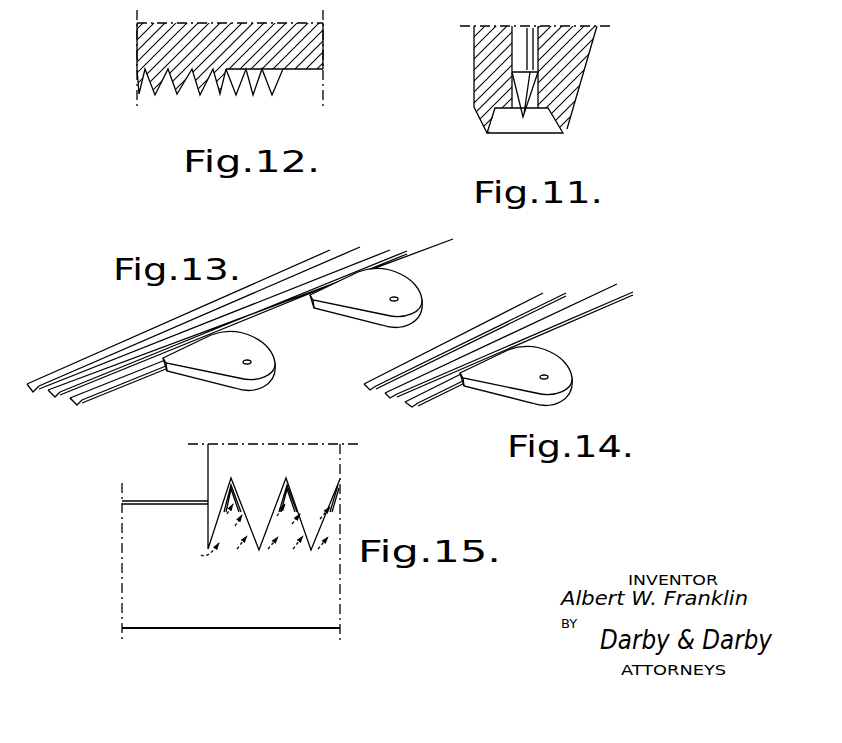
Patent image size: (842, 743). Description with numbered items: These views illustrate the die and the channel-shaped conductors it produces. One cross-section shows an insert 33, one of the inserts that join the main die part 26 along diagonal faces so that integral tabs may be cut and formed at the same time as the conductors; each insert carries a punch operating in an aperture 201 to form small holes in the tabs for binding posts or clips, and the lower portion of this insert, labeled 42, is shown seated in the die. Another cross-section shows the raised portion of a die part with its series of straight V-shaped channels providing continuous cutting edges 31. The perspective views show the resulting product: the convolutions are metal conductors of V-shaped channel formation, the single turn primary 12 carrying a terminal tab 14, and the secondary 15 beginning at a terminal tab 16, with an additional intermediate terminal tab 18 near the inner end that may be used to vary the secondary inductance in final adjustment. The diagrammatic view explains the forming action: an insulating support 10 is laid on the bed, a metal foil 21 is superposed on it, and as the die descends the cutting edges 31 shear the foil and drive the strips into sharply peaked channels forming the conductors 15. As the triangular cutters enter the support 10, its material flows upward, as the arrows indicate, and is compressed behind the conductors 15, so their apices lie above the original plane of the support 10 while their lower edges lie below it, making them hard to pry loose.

In FIG. 15, the insulating support 10 is at (129, 564).
In FIG. 13, the single turn primary 12 is at (109, 377).
In FIG. 13, the terminal tab 14 is at (274, 350).
In FIG. 13, the secondary conductors 15 is at (124, 350).
In FIG. 14, the secondary conductors 15 is at (460, 330).
In FIG. 15, the secondary conductors 15 is at (215, 484).
In FIG. 13, the terminal tab 16 is at (397, 286).
In FIG. 14, the additional terminal tab 18 is at (547, 365).
In FIG. 15, the metal foil 21 is at (153, 492).
In FIG. 12, the main die part 26 is at (294, 30).
In FIG. 15, the main die part 26 is at (209, 456).
In FIG. 12, the cutting edges 31 is at (188, 92).
In FIG. 15, the cutting edges 31 is at (332, 468).
In FIG. 11, the insert 33 is at (572, 42).
In FIG. 11, the base flange 42 is at (481, 127).
In FIG. 11, the aperture 201 is at (503, 89).